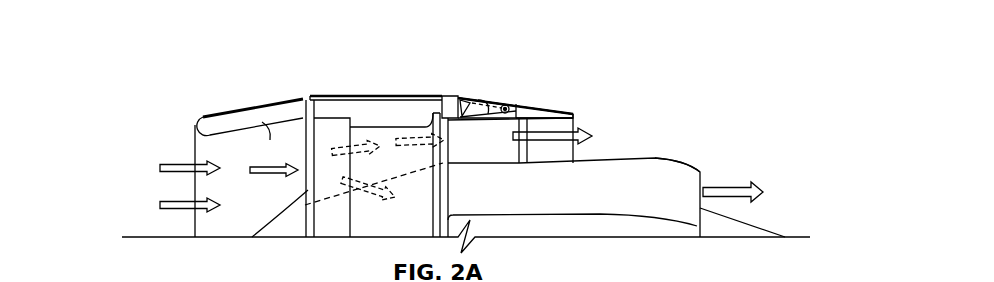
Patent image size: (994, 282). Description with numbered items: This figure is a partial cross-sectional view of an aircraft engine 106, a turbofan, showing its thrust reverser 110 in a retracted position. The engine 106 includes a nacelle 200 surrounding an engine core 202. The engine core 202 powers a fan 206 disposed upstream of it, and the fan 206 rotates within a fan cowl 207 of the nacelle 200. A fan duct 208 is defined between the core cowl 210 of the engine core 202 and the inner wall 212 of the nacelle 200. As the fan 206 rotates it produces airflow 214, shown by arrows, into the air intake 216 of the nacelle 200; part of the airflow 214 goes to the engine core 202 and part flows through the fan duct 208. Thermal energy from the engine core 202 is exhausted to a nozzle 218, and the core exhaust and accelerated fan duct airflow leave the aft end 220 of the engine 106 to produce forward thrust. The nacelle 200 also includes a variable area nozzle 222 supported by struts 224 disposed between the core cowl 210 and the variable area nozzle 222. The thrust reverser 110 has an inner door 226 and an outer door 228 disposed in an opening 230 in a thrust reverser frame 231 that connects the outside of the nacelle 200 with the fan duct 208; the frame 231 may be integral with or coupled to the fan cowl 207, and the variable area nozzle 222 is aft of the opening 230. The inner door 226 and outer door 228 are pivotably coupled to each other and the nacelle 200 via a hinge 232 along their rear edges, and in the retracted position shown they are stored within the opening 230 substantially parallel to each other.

The aircraft engine 106 is at (178, 58).
The thrust reverser 110 is at (514, 57).
The nacelle 200 is at (370, 97).
The engine core 202 is at (582, 198).
The fan 206 is at (308, 190).
The fan cowl 207 is at (320, 97).
The fan duct 208 is at (490, 146).
The core cowl 210 is at (627, 157).
The inner wall 212 is at (270, 133).
The airflow 214 is at (158, 168).
The air intake 216 is at (202, 113).
The nozzle 218 is at (682, 182).
The aft end 220 is at (758, 167).
The variable area nozzle 222 is at (570, 113).
The strut 224 is at (523, 123).
The inner door 226 is at (477, 96).
The outer door 228 is at (497, 100).
The opening 230 is at (486, 88).
The thrust reverser frame 231 is at (447, 97).
The hinge 232 is at (512, 107).